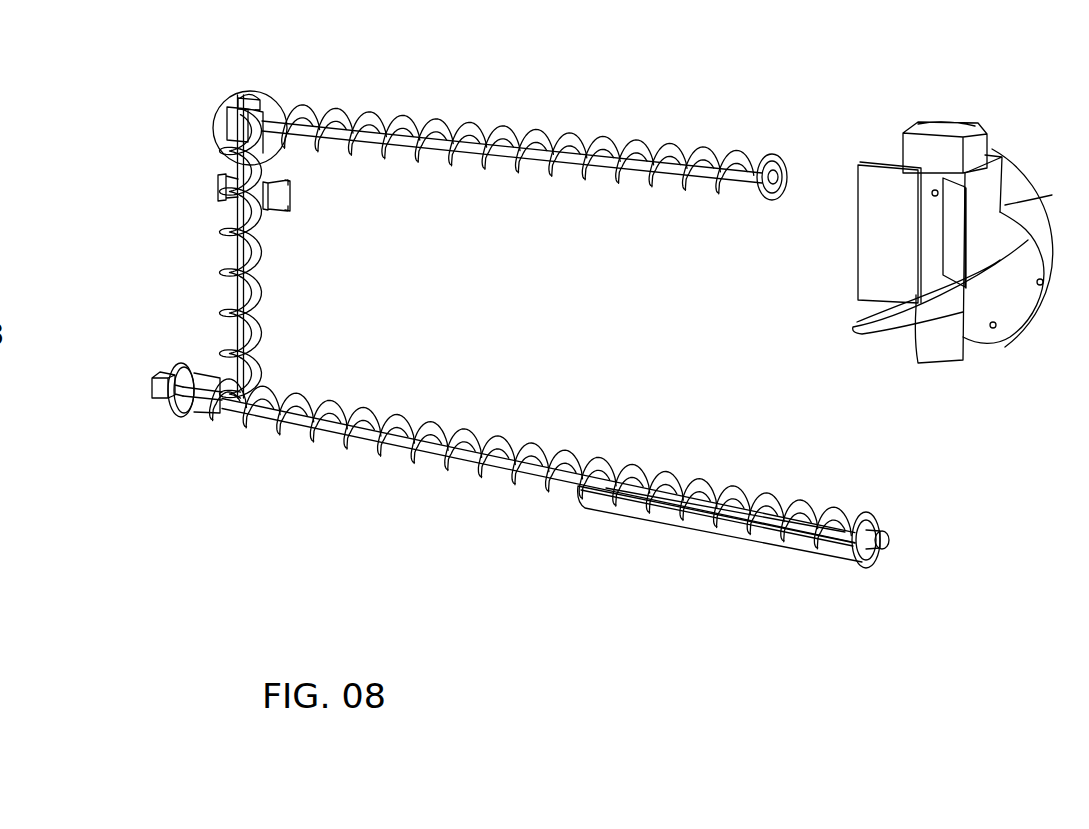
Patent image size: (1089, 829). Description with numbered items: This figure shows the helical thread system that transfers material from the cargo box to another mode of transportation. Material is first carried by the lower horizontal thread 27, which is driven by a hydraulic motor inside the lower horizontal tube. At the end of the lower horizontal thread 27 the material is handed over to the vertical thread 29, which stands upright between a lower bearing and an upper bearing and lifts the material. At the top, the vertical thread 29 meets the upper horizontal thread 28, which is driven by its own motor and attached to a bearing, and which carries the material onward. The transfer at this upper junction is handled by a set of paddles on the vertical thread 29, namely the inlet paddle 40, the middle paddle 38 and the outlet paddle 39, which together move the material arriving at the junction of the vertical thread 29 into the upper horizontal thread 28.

The lower horizontal thread 27 is at (433, 443).
The upper horizontal thread 28 is at (470, 145).
The vertical thread 29 is at (236, 288).
The middle paddle 38 is at (952, 233).
The outlet paddle 39 is at (990, 183).
The inlet paddle 40 is at (882, 226).